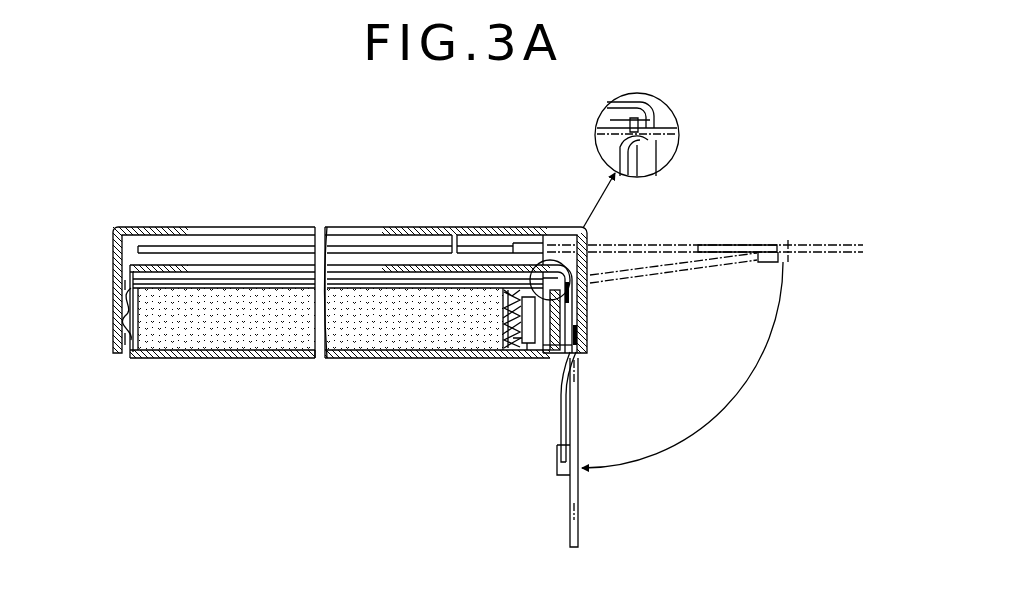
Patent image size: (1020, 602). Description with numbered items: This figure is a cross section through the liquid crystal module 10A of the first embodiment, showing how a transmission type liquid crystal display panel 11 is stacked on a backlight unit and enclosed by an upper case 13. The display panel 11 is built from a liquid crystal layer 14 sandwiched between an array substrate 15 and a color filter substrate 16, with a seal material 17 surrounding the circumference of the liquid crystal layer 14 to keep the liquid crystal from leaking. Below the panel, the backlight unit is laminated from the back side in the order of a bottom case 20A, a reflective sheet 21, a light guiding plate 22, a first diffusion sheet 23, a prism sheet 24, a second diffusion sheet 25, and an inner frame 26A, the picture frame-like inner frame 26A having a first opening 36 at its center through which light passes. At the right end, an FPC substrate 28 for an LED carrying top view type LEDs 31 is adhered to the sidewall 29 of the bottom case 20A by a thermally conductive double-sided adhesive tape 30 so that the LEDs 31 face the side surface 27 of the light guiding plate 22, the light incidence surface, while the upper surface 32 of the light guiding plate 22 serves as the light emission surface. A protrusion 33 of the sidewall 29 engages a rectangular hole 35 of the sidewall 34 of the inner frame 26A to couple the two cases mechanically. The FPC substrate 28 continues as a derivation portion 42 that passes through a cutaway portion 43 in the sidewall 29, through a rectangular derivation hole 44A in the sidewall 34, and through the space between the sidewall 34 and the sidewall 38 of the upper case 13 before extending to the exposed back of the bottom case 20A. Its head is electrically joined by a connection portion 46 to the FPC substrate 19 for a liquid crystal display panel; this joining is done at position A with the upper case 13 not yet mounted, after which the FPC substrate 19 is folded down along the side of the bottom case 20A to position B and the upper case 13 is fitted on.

The liquid crystal module 10A is at (105, 183).
The transmission type liquid crystal display panel 11 is at (160, 238).
The color filter substrate 16 is at (198, 238).
The liquid crystal layer 14 is at (223, 250).
The array substrate 15 is at (262, 258).
The first opening 36 is at (292, 263).
The upper surface 32 is at (337, 283).
The second diffusion sheet 25 is at (357, 277).
The prism sheet 24 is at (397, 282).
The first diffusion sheet 23 is at (435, 287).
The seal material 17 is at (453, 228).
The inner frame 26A is at (512, 265).
The upper case 13 is at (555, 226).
The light guiding plate 22 is at (440, 327).
The reflective sheet 21 is at (397, 350).
The bottom case 20A is at (345, 357).
The side surface 27 is at (517, 352).
The top view type LED 31 is at (527, 340).
The sidewall 29 is at (573, 296).
The FPC substrate for an LED 28 is at (566, 306).
The sidewall 34 is at (558, 323).
The double-sided adhesive tape 30 is at (572, 345).
The derivation portion 42 is at (563, 393).
The FPC substrate for a liquid crystal display panel 19 is at (575, 415).
The connection portion 46 is at (563, 467).
The rectangular hole 35 is at (573, 517).
The protrusion 33 is at (120, 317).
The sidewall 38 is at (583, 258).
The derivation hole 44A is at (652, 147).
The cutaway portion 43 is at (628, 128).